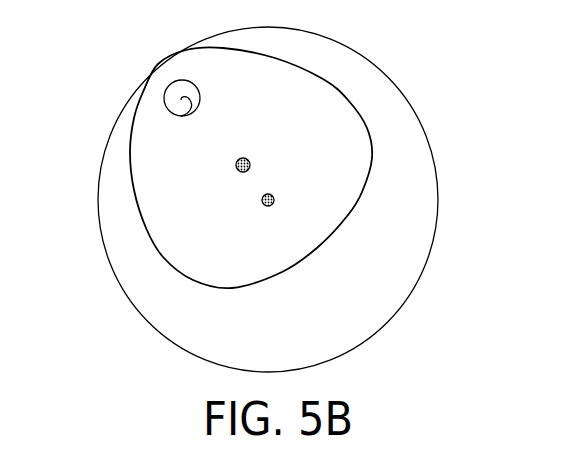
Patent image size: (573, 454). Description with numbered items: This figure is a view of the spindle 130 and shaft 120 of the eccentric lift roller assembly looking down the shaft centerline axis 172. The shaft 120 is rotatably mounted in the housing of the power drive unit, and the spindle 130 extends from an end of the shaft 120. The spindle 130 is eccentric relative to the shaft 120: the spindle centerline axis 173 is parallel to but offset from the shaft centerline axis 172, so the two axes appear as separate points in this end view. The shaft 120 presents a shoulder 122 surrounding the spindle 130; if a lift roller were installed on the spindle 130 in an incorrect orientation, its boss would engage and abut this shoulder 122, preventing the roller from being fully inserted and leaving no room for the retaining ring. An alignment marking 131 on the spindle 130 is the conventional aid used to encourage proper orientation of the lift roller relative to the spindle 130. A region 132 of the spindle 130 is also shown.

The shaft 120 is at (413, 110).
The shoulder 122 is at (425, 193).
The spindle 130 is at (342, 90).
The alignment marking 131 is at (163, 110).
The inner region 132 is at (294, 124).
The shaft centerline axis 172 is at (274, 199).
The spindle centerline axis 173 is at (237, 162).